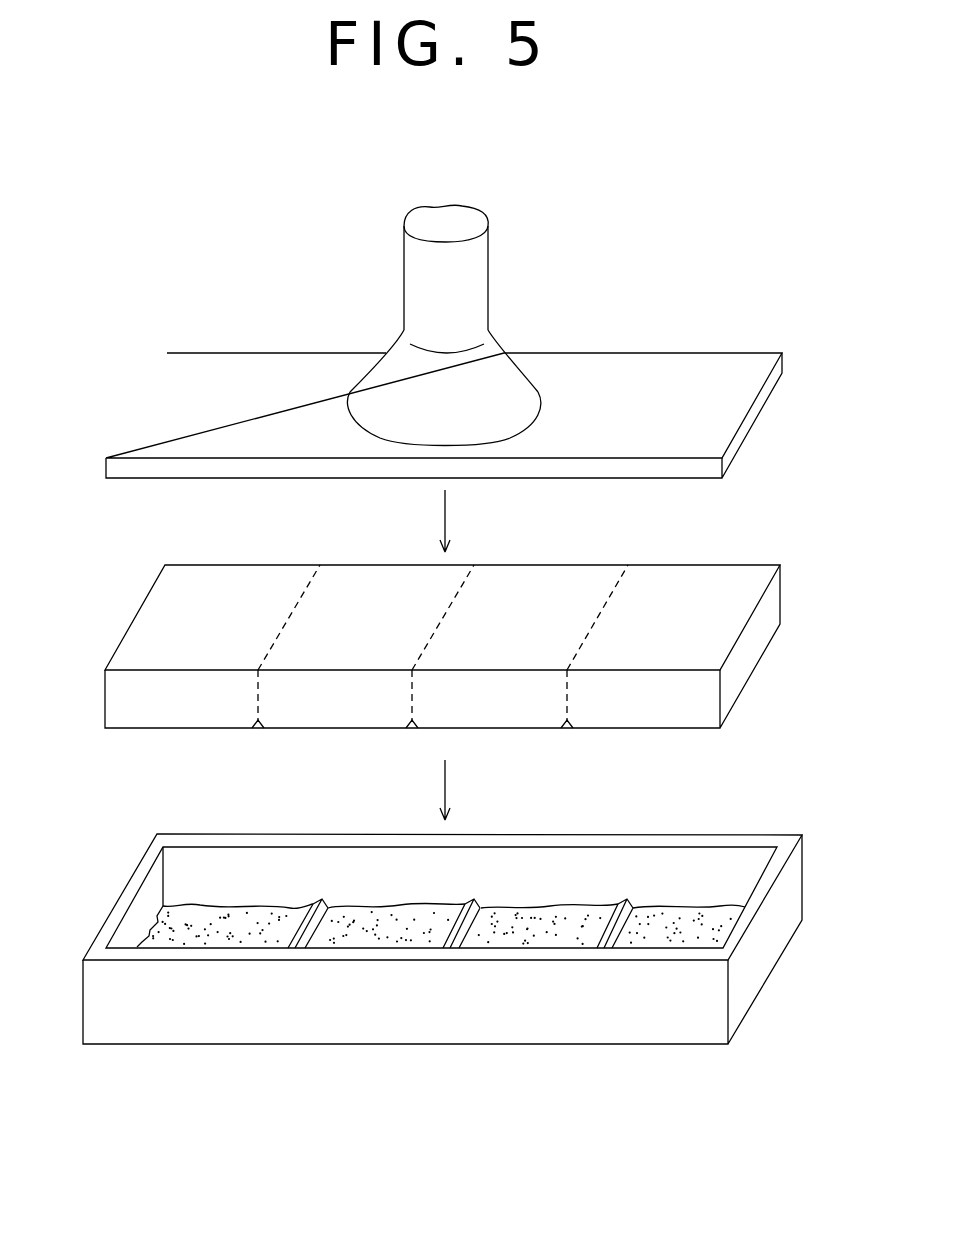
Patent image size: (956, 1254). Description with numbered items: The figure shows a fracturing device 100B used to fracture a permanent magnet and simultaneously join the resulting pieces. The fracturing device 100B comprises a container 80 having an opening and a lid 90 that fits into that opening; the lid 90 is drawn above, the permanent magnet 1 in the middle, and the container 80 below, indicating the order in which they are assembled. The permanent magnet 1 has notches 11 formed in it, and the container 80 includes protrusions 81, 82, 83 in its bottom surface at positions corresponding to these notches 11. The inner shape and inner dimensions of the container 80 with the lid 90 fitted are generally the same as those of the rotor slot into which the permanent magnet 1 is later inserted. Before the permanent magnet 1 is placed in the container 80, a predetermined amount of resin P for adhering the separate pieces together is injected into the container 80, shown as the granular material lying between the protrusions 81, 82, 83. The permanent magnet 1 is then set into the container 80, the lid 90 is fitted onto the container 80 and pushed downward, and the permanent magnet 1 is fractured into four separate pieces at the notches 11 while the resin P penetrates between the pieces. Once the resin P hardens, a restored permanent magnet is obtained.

The fracturing device 100B is at (134, 297).
The lid 90 is at (680, 367).
The permanent magnet 1 is at (455, 689).
The notches 11 is at (258, 733).
The container 80 is at (440, 1015).
The protrusion 81 is at (308, 912).
The protrusion 82 is at (463, 911).
The protrusion 83 is at (613, 911).
The resin P is at (198, 930).